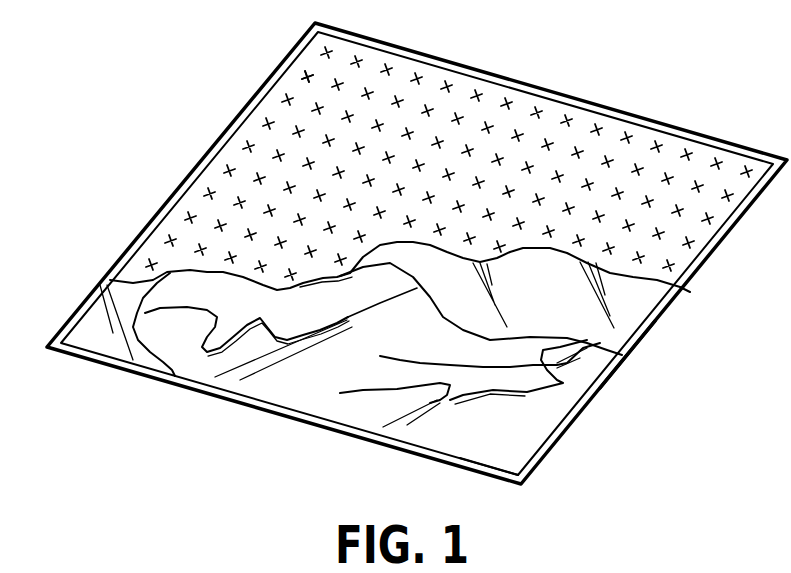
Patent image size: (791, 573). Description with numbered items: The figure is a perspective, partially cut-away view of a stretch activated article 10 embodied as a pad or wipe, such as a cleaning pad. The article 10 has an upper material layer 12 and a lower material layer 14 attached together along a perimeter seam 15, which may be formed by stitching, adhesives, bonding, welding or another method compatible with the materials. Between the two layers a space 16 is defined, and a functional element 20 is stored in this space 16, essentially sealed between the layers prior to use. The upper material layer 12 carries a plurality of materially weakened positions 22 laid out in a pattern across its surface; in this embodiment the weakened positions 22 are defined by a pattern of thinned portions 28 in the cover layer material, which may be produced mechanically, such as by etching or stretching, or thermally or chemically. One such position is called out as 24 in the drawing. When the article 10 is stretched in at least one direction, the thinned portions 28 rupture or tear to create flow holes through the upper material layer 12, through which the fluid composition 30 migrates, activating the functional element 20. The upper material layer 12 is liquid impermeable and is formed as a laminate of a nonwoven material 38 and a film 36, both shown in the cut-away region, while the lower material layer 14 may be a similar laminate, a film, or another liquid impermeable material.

The article 10 is at (138, 104).
The upper material layer 12 is at (642, 138).
The lower material layer 14 is at (510, 447).
The perimeter seam 15 is at (622, 378).
The space 16 is at (130, 304).
The functional element 20 is at (396, 353).
The materially weakened positions 22 is at (449, 99).
The pattern feature 24 is at (306, 76).
The thinned portions 28 is at (660, 233).
The fluid composition 30 is at (358, 392).
The film 36 is at (440, 311).
The nonwoven material 38 is at (533, 248).